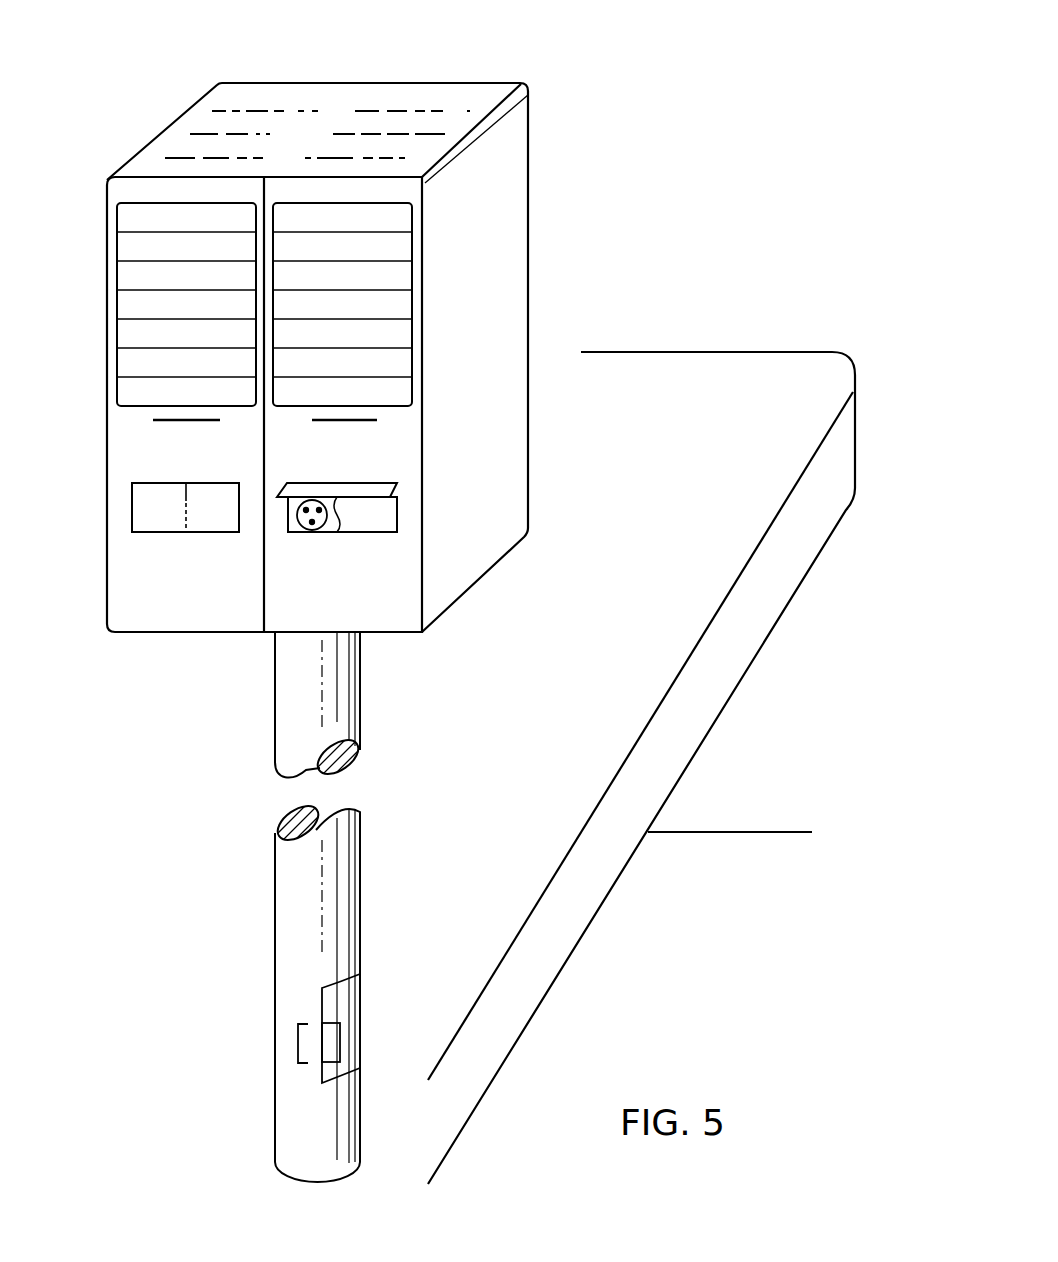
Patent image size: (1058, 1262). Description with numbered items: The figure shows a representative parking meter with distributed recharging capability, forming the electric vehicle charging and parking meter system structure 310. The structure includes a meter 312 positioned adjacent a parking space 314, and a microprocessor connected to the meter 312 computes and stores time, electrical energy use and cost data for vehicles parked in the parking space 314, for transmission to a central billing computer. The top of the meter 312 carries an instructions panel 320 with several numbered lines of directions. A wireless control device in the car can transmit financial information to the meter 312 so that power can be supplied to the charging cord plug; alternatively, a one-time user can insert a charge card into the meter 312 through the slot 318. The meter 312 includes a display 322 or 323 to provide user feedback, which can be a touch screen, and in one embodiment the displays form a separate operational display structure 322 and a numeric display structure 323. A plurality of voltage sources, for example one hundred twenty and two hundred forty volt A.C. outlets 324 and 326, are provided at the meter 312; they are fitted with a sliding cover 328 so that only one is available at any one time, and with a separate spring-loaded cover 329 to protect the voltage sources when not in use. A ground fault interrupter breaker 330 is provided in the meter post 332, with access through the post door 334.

The electric vehicle charging and parking meter system structure 310 is at (632, 281).
The meter 312 is at (132, 151).
The parking space 314 is at (710, 832).
The slot 318 is at (158, 420).
The instructions panel 320 is at (482, 95).
The operational display structure 322 is at (120, 293).
The numeric display structure 323 is at (412, 292).
The 120 volt A.C. outlet 324 is at (130, 507).
The 240 volt A.C. outlet 326 is at (238, 537).
The sliding cover 328 is at (388, 537).
The spring-loaded cover 329 is at (393, 490).
The ground fault interrupter breaker 330 is at (340, 1038).
The meter post 332 is at (362, 868).
The post door 334 is at (325, 1002).